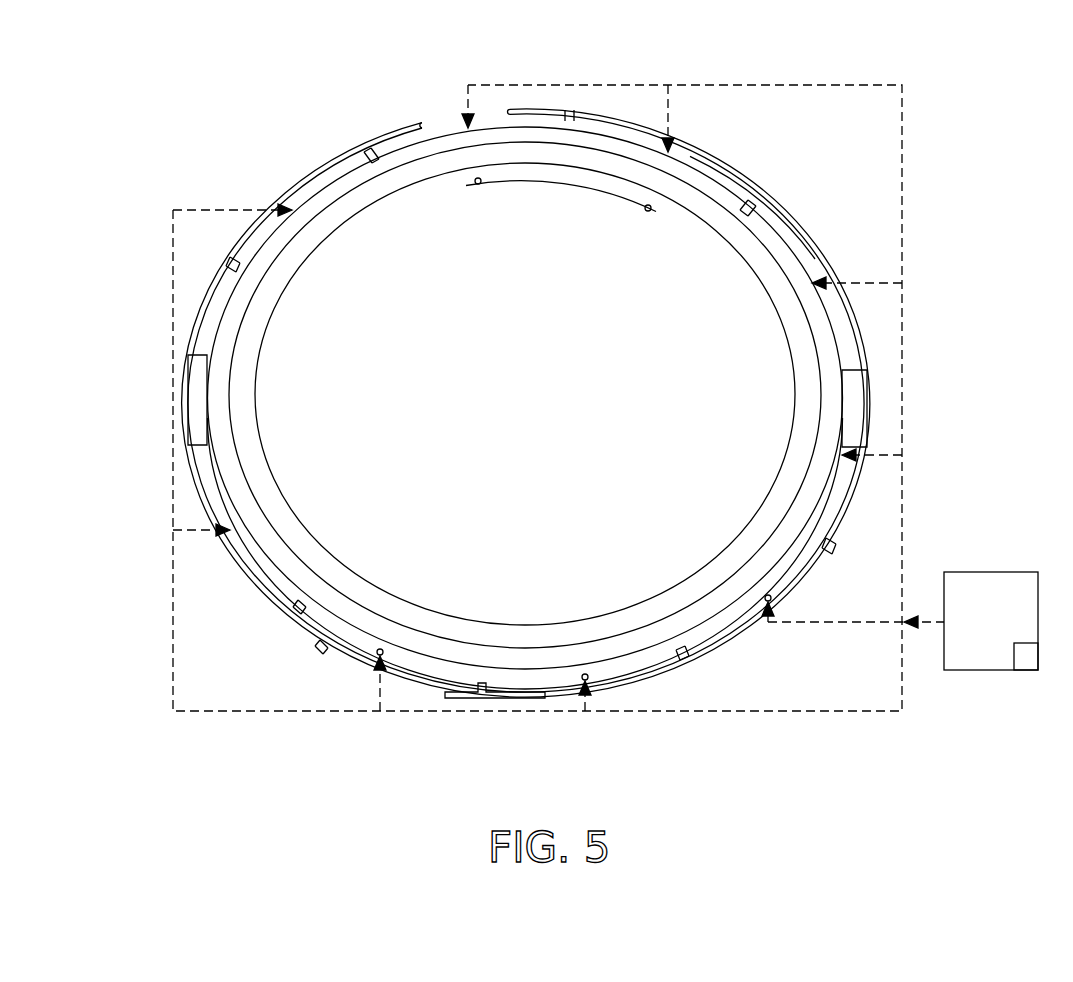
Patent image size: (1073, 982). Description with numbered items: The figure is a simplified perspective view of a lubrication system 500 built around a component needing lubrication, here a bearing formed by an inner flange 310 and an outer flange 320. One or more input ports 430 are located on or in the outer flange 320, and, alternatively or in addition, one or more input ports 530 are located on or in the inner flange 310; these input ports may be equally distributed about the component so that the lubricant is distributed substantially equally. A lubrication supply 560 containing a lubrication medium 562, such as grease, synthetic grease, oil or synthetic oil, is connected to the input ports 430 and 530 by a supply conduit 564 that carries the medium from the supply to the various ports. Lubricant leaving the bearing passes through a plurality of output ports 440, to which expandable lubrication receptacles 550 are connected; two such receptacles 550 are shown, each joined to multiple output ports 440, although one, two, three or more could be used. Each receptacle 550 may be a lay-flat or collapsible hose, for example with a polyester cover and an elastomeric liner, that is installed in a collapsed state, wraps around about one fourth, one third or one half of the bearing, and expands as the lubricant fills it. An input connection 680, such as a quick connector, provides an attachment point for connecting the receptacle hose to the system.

The lubrication system 500 is at (288, 78).
The inner flange 310 is at (310, 222).
The outer flange 320 is at (300, 195).
The input ports 430 is at (247, 531).
The output ports 440 is at (455, 690).
The input ports 530 is at (645, 211).
The expandable lubrication receptacle 550 is at (190, 372).
The lubrication supply 560 is at (1016, 619).
The lubrication medium 562 is at (1030, 672).
The supply conduit 564 is at (902, 213).
The input connection 680 is at (797, 240).